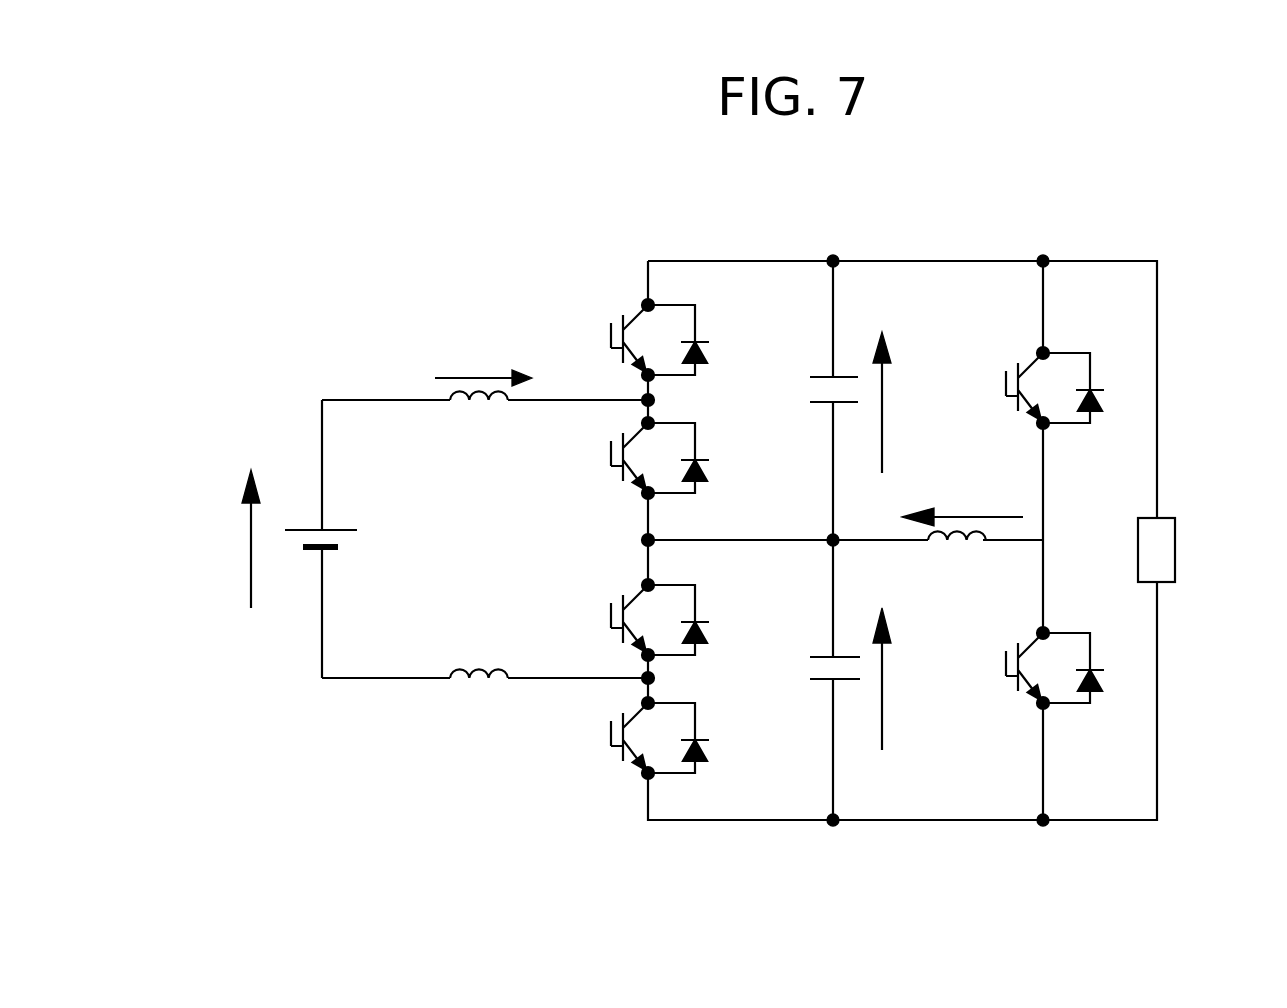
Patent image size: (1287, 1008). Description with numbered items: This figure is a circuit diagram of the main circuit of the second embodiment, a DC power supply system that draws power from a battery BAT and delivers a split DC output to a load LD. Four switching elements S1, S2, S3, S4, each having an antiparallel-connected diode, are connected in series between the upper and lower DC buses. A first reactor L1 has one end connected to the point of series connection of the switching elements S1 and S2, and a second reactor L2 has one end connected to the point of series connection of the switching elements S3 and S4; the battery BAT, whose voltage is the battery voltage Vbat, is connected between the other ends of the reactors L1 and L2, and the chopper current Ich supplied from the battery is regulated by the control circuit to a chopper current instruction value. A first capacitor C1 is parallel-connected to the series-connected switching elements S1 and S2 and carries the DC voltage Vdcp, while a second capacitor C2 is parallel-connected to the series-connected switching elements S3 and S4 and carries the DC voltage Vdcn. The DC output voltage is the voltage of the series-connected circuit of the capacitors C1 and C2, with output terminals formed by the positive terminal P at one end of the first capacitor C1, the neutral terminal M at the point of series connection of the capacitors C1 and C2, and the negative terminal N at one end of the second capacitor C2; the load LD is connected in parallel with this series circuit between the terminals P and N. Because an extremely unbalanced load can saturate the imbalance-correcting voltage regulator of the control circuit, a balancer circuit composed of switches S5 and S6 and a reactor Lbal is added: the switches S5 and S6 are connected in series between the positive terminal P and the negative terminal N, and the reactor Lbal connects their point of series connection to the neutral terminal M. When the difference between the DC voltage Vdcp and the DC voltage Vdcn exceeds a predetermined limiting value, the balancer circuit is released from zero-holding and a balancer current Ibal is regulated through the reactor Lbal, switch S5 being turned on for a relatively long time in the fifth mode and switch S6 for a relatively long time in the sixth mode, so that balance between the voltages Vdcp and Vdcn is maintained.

The switching element S1 is at (633, 325).
The switching element S2 is at (633, 467).
The switching element S3 is at (633, 617).
The switching element S4 is at (640, 759).
The switch S5 is at (1057, 370).
The switch S6 is at (1055, 687).
The first reactor L1 is at (479, 420).
The second reactor L2 is at (479, 698).
The reactor Lbal is at (957, 556).
The first capacitor C1 is at (815, 371).
The second capacitor C2 is at (816, 648).
The battery BAT is at (341, 520).
The load LD is at (1184, 542).
The positive DC node P is at (855, 245).
The middle node M is at (850, 562).
The negative DC node N is at (938, 561).
The battery voltage Vbat is at (219, 539).
The chopper current Ich is at (483, 353).
The balancer current Ibal is at (962, 497).
The DC voltage Vdcp is at (915, 402).
The DC voltage Vdcn is at (915, 679).